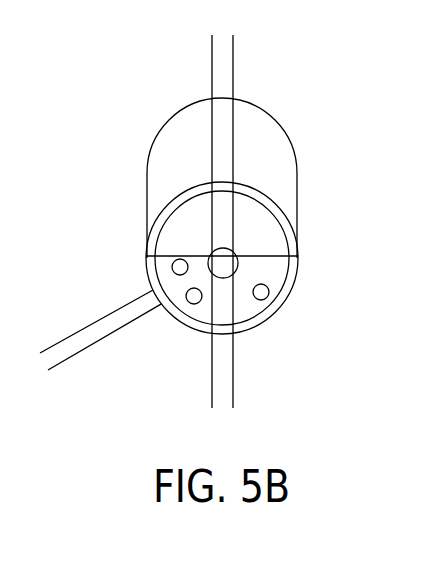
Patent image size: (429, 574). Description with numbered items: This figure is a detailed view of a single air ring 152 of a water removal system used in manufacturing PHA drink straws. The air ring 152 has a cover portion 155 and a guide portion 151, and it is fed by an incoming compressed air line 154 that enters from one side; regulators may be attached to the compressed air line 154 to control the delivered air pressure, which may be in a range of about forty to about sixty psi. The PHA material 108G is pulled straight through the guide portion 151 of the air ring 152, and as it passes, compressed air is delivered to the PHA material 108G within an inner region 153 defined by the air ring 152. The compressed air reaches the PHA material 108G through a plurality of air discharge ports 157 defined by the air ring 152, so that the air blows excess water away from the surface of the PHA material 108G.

The PHA material 108G is at (233, 55).
The guide portion 151 is at (213, 251).
The air ring 152 is at (166, 147).
The inner region 153 is at (297, 251).
The incoming compressed air line 154 is at (118, 335).
The cover portion 155 is at (284, 214).
The air discharge ports 157 is at (264, 294).